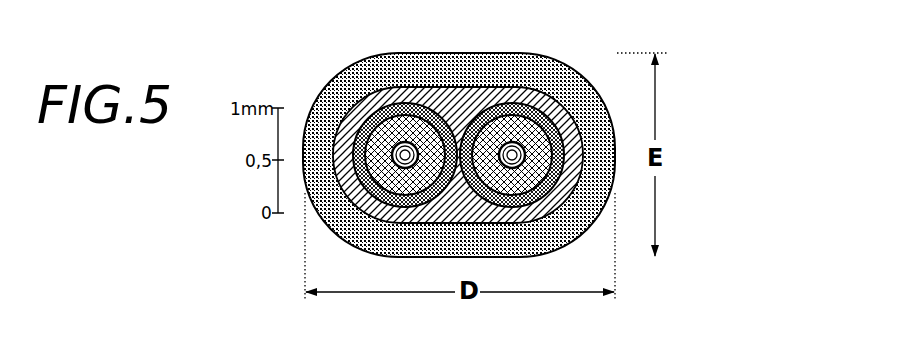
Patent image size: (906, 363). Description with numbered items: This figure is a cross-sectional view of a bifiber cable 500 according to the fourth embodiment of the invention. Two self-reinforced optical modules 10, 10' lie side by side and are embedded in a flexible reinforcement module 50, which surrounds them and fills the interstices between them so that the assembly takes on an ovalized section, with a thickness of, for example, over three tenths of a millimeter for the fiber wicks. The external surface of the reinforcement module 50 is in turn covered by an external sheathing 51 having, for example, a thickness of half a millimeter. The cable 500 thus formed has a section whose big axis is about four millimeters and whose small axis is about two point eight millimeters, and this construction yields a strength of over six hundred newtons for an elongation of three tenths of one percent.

The cable 500 is at (535, 131).
The external sheathing 51 is at (390, 70).
The flexible reinforcement module 50 is at (348, 120).
The self-reinforced optical module 10 is at (415, 109).
The self-reinforced optical module 10' is at (527, 109).